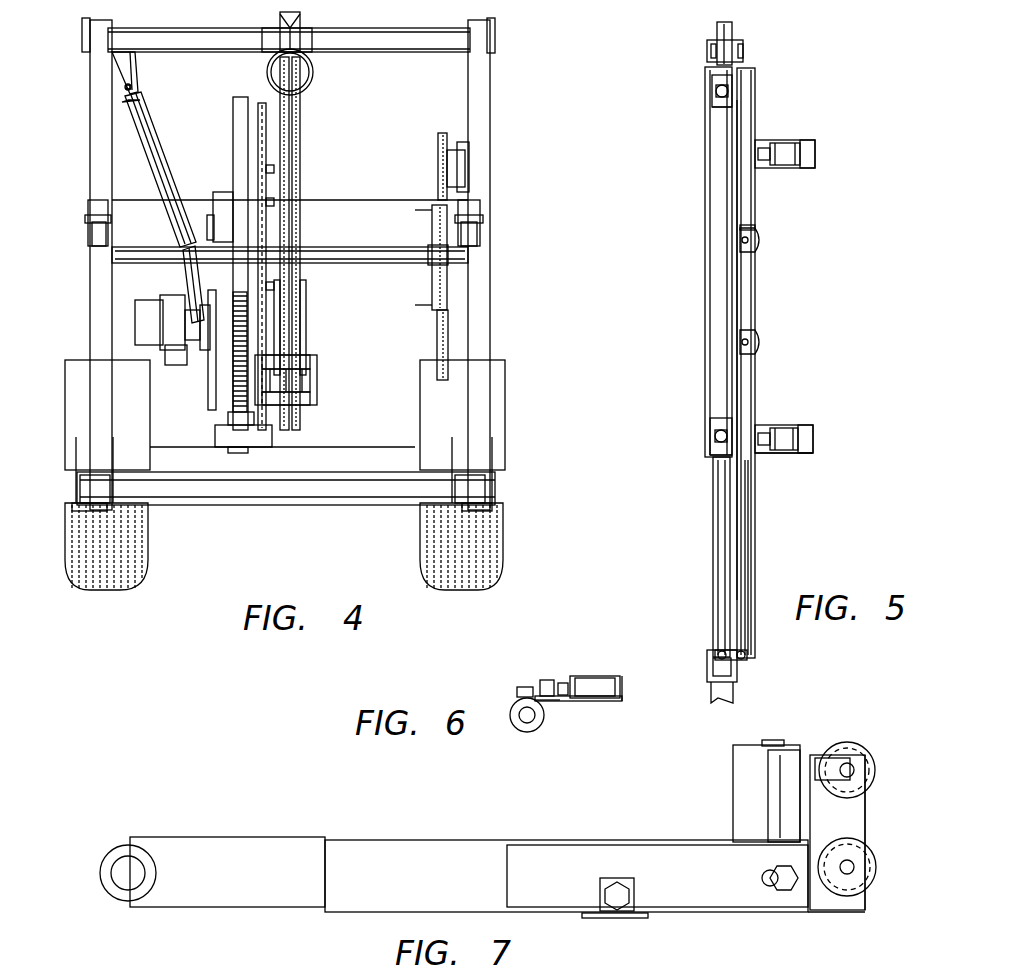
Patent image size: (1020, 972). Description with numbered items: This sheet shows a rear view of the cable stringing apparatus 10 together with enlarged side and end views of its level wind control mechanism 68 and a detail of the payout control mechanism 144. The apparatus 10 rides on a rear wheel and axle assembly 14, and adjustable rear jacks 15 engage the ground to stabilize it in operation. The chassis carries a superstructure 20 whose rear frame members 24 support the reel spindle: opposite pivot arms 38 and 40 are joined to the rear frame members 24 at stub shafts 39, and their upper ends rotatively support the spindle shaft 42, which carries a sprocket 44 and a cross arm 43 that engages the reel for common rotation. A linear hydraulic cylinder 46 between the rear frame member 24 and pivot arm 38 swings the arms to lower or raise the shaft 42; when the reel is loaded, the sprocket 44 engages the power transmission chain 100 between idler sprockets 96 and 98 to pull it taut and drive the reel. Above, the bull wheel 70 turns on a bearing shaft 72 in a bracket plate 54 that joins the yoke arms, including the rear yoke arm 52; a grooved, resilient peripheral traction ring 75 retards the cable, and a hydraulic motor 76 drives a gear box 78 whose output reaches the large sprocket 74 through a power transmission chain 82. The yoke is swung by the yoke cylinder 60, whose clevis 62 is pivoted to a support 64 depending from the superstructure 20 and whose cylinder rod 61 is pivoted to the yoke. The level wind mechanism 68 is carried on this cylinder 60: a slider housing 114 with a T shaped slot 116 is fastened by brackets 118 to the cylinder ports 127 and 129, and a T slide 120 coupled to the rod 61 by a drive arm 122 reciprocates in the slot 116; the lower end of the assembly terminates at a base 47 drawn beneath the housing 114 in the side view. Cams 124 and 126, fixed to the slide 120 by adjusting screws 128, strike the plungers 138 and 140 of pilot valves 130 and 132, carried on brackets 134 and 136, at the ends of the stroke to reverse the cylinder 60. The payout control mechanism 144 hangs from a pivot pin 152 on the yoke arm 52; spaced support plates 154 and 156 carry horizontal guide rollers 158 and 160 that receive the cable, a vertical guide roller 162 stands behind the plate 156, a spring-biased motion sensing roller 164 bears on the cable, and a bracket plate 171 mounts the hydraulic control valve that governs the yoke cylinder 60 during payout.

In FIG. 4, the cable stringing apparatus 10 is at (226, 610).
In FIG. 4, the rear wheel and axle assembly 14 is at (112, 590).
In FIG. 4, the rear jacks 15 is at (90, 510).
In FIG. 4, the superstructure 20 is at (518, 75).
In FIG. 4, the rear frame member 24 is at (92, 132).
In FIG. 4, the pivot arm 38 is at (92, 312).
In FIG. 4, the stub shafts 39 is at (70, 490).
In FIG. 4, the pivot arm 40 is at (478, 322).
In FIG. 4, the spindle shaft 42 is at (370, 255).
In FIG. 4, the cross arm 43 is at (430, 226).
In FIG. 4, the sprocket 44 is at (445, 275).
In FIG. 4, the linear hydraulic cylinder 46 is at (95, 230).
In FIG. 5, the base 47 is at (708, 682).
In FIG. 4, the rear yoke arm 52 is at (242, 103).
In FIG. 4, the bracket plate 54 is at (222, 190).
In FIG. 4, the yoke cylinder 60 is at (145, 120).
In FIG. 5, the yoke cylinder 60 is at (718, 172).
In FIG. 6, the yoke cylinder 60 is at (522, 724).
In FIG. 4, the cylinder rod 61 is at (190, 295).
In FIG. 5, the cylinder rod 61 is at (716, 536).
In FIG. 4, the clevis 62 is at (130, 90).
In FIG. 5, the clevis 62 is at (712, 62).
In FIG. 4, the support 64 is at (120, 66).
In FIG. 5, the support 64 is at (715, 34).
In FIG. 4, the level wind control mechanism 68 is at (172, 138).
In FIG. 5, the level wind control mechanism 68 is at (808, 306).
In FIG. 4, the bull wheel 70 is at (326, 147).
In FIG. 4, the bearing shaft 72 is at (207, 215).
In FIG. 4, the large sprocket 74 is at (262, 146).
In FIG. 4, the peripheral traction ring 75 is at (298, 115).
In FIG. 4, the hydraulic motor 76 is at (172, 340).
In FIG. 4, the gear box 78 is at (210, 412).
In FIG. 4, the power transmission chain 82 is at (284, 328).
In FIG. 4, the idler sprocket 96 is at (442, 165).
In FIG. 4, the idler sprocket 98 is at (437, 336).
In FIG. 4, the power transmission chain 100 is at (440, 188).
In FIG. 5, the slider housing 114 is at (755, 195).
In FIG. 5, the T shaped slot 116 is at (743, 522).
In FIG. 5, the brackets 118 is at (714, 92).
In FIG. 6, the brackets 118 is at (528, 688).
In FIG. 5, the T slide 120 is at (745, 563).
In FIG. 6, the T slide 120 is at (548, 695).
In FIG. 5, the drive arm 122 is at (748, 655).
In FIG. 5, the cam 124 is at (757, 240).
In FIG. 5, the cam 126 is at (760, 342).
In FIG. 6, the cam 126 is at (550, 680).
In FIG. 5, the port 127 is at (718, 105).
In FIG. 5, the adjusting screws 128 is at (752, 250).
In FIG. 5, the port 129 is at (710, 447).
In FIG. 5, the cam actuator pilot valve 130 is at (790, 168).
In FIG. 5, the cam actuator pilot valve 132 is at (790, 455).
In FIG. 6, the cam actuator pilot valve 132 is at (602, 680).
In FIG. 5, the bracket 134 is at (812, 150).
In FIG. 5, the bracket 136 is at (812, 430).
In FIG. 6, the bracket 136 is at (605, 698).
In FIG. 5, the plunger 138 is at (768, 148).
In FIG. 5, the plunger 140 is at (768, 432).
In FIG. 6, the plunger 140 is at (568, 685).
In FIG. 4, the payout control mechanism 144 is at (272, 434).
In FIG. 7, the payout control mechanism 144 is at (386, 832).
In FIG. 7, the pivot pin 152 is at (130, 873).
In FIG. 4, the horizontal support plate 154 is at (314, 378).
In FIG. 7, the horizontal support plate 154 is at (845, 818).
In FIG. 7, the horizontal support plate 156 is at (890, 863).
In FIG. 4, the horizontal guide roller 158 is at (300, 354).
In FIG. 7, the horizontal guide roller 158 is at (850, 772).
In FIG. 4, the horizontal guide roller 160 is at (300, 398).
In FIG. 7, the horizontal guide roller 160 is at (866, 878).
In FIG. 7, the vertical guide roller 162 is at (822, 942).
In FIG. 7, the motion sensing roller 164 is at (785, 768).
In FIG. 7, the bracket plate 171 is at (590, 914).